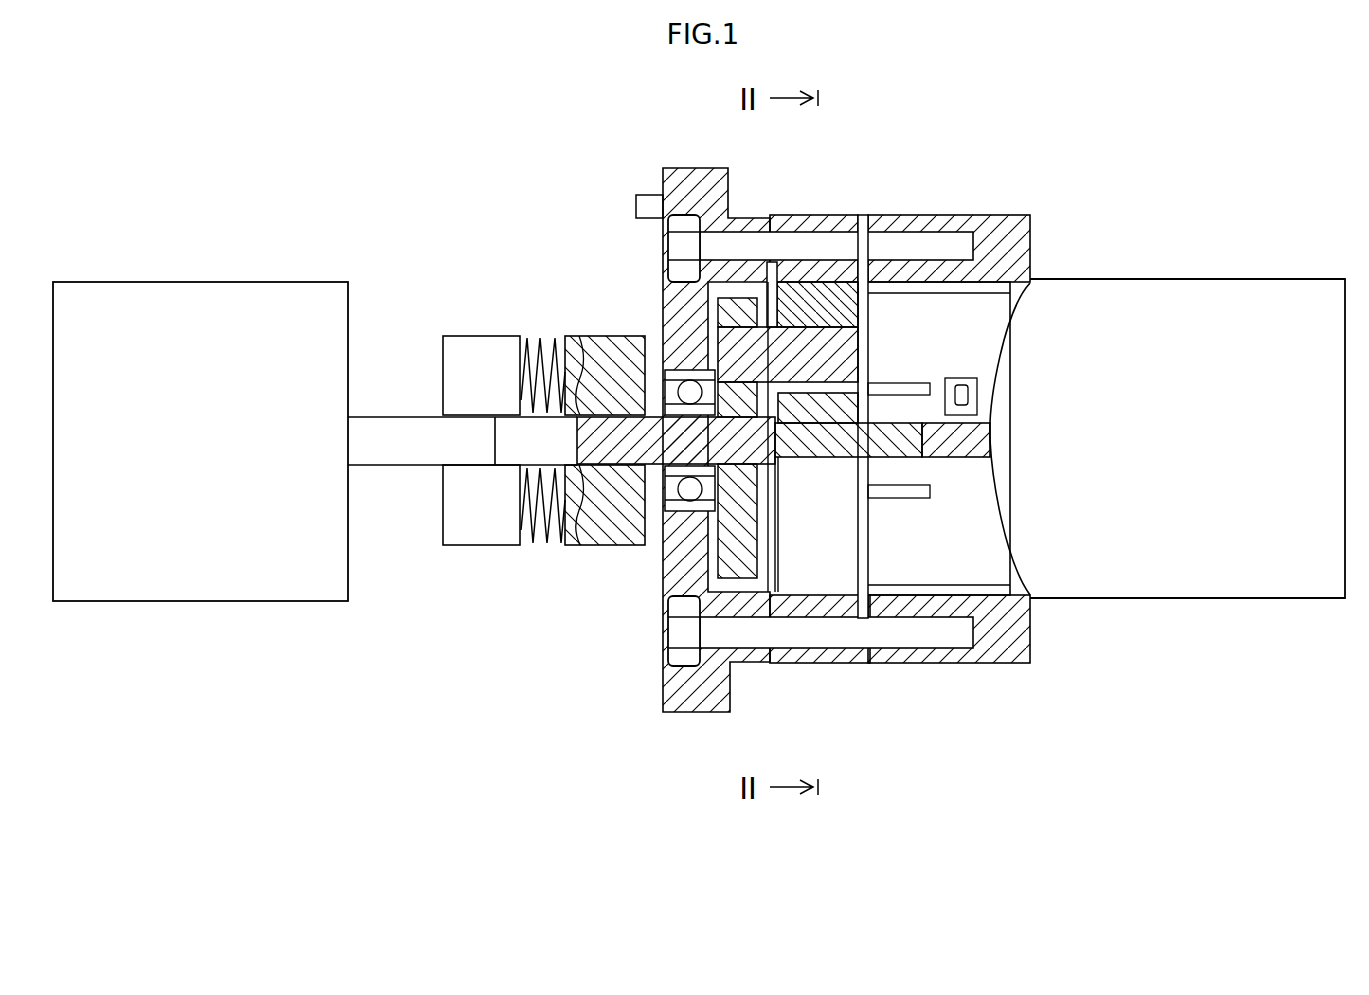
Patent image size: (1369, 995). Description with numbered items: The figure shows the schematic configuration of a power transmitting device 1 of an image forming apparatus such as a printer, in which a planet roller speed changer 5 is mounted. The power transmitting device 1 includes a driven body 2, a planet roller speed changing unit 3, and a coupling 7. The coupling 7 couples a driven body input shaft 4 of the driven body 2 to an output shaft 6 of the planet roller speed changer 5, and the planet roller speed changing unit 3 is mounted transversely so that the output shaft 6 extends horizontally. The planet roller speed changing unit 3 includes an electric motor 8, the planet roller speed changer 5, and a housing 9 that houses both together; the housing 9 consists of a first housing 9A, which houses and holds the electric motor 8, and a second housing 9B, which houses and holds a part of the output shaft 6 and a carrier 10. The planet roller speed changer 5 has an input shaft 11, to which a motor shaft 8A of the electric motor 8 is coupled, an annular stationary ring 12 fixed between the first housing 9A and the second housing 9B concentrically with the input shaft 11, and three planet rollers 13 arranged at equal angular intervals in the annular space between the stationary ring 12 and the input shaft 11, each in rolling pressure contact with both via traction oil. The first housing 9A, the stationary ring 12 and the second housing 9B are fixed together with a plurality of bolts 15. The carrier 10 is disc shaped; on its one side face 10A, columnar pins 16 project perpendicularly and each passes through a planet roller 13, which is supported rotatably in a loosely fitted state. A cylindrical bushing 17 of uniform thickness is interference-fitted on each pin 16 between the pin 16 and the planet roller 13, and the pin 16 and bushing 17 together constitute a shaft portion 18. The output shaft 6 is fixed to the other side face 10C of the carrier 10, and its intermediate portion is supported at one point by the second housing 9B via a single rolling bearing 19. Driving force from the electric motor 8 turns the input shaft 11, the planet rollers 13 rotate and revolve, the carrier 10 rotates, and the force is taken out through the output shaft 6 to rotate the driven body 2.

The power transmitting device 1 is at (425, 168).
The driven body 2 is at (192, 588).
The planet roller speed changing unit 3 is at (1021, 699).
The driven body input shaft 4 is at (388, 418).
The planet roller speed changer 5 is at (853, 677).
The output shaft 6 is at (606, 362).
The coupling 7 is at (543, 303).
The electric motor 8 is at (1218, 572).
The motor shaft 8A is at (947, 453).
The housing 9 is at (887, 373).
The first housing 9A is at (949, 400).
The second housing 9B is at (755, 218).
The carrier 10 is at (762, 548).
The one side face of the carrier 10A is at (852, 540).
The other side face of the carrier 10C is at (718, 566).
The input shaft 11 is at (822, 449).
The stationary ring 12 is at (852, 580).
The planet roller 13 is at (803, 302).
The bolt 15 is at (723, 248).
The pin 16 is at (835, 345).
The bushing 17 is at (833, 320).
The shaft portion 18 is at (928, 300).
The rolling bearing 19 is at (674, 372).